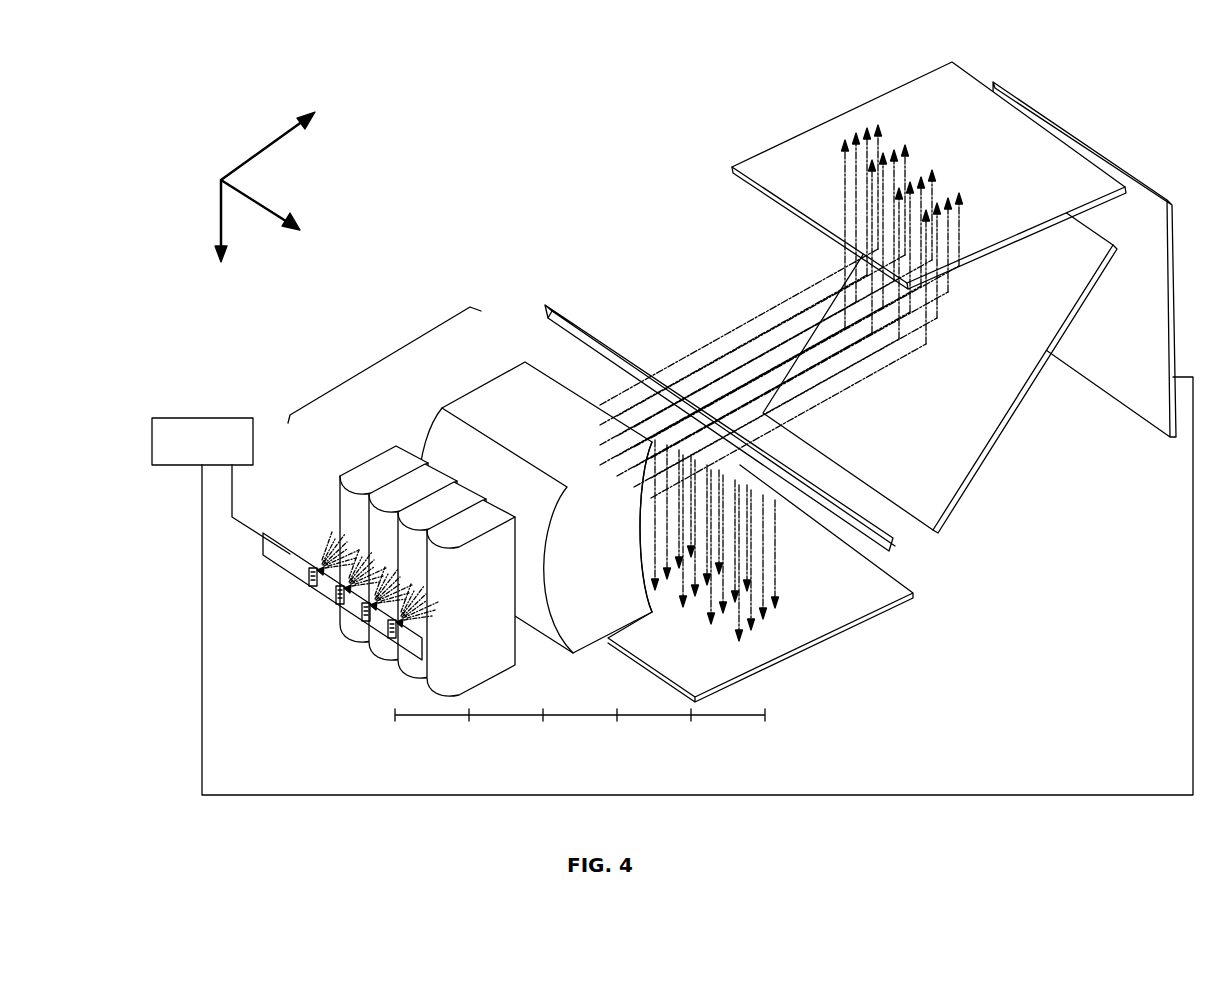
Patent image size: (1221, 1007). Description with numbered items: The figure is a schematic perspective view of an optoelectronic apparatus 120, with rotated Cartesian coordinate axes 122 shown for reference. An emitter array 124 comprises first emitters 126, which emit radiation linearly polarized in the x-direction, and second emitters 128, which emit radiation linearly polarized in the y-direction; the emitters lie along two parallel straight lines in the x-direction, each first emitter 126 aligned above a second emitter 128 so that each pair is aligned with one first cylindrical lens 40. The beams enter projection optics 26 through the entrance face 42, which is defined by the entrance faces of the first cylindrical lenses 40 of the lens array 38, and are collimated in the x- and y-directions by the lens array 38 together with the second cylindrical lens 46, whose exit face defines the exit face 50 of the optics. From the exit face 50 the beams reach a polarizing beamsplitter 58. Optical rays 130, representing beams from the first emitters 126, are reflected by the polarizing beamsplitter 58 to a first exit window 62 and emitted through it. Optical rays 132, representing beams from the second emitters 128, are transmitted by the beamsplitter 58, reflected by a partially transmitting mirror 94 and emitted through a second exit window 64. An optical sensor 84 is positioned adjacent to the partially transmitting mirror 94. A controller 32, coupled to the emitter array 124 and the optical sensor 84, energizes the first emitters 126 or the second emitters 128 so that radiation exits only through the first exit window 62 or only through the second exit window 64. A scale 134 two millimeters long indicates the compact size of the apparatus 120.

The projection optics 26 is at (400, 501).
The controller 32 is at (200, 418).
The lens array 38 is at (357, 461).
The first cylindrical lens 40 is at (393, 492).
The entrance face 42 is at (340, 503).
The second cylindrical lens 46 is at (550, 497).
The exit face 50 is at (654, 582).
The polarizing beamsplitter 58 is at (894, 549).
The first exit window 62 is at (841, 632).
The second exit window 64 is at (758, 166).
The optical sensor 84 is at (1160, 306).
The partially transmitting mirror 94 is at (995, 433).
The optoelectronic apparatus 120 is at (586, 182).
The Cartesian coordinate axes 122 is at (258, 153).
The emitter array 124 is at (282, 552).
The first emitter 126 is at (316, 590).
The second emitter 128 is at (341, 606).
The optical rays 130 is at (740, 570).
The optical rays 132 is at (737, 340).
The scale 134 is at (425, 722).